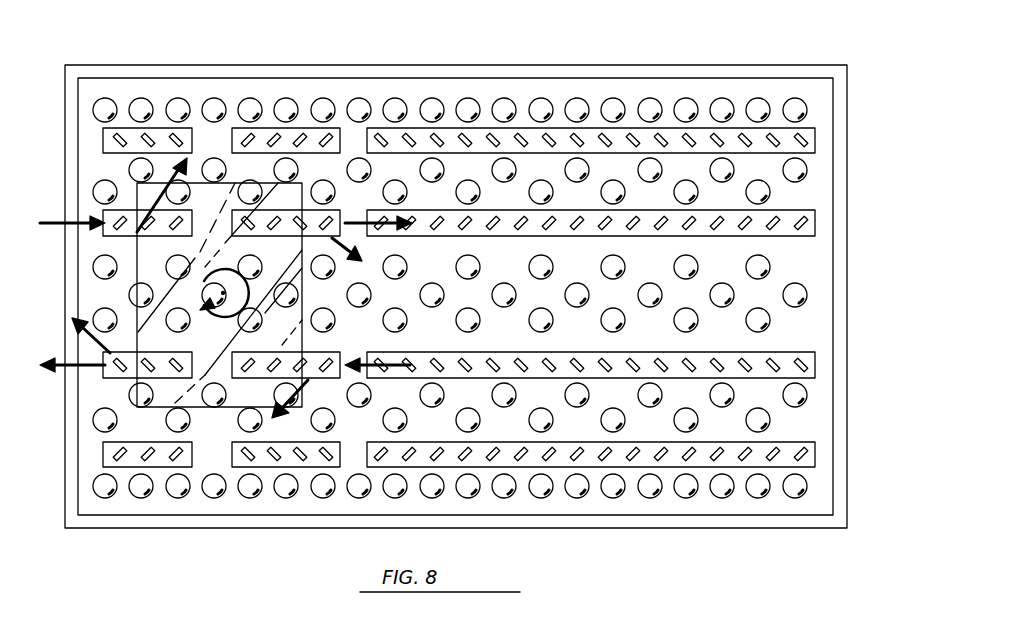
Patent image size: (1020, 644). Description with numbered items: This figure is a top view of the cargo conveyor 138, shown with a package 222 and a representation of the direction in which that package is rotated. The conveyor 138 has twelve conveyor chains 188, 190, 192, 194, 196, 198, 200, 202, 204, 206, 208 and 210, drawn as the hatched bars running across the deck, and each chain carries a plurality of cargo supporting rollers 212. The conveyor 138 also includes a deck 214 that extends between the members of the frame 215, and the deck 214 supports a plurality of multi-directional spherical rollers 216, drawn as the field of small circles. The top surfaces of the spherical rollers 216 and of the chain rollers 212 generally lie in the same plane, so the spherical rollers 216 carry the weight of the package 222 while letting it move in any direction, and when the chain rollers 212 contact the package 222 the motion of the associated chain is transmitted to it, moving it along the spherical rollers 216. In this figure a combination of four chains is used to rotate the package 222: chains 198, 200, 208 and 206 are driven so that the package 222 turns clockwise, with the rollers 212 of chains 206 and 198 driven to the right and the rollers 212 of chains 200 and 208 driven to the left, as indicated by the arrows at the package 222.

The cargo conveyor 138 is at (458, 300).
The conveyor chain 188 is at (815, 365).
The conveyor chain 190 is at (815, 455).
The conveyor chain 192 is at (630, 89).
The conveyor chain 194 is at (815, 212).
The conveyor chain 196 is at (333, 127).
The conveyor chain 198 is at (345, 220).
The conveyor chain 200 is at (333, 378).
The conveyor chain 202 is at (270, 467).
The conveyor chain 204 is at (156, 127).
The conveyor chain 206 is at (103, 214).
The conveyor chain 208 is at (108, 380).
The conveyor chain 210 is at (163, 467).
The cargo supporting rollers 212 is at (672, 138).
The deck 214 is at (633, 508).
The frame 215 is at (848, 505).
The multi-directional spherical rollers 216 is at (764, 268).
The package 222 is at (136, 246).